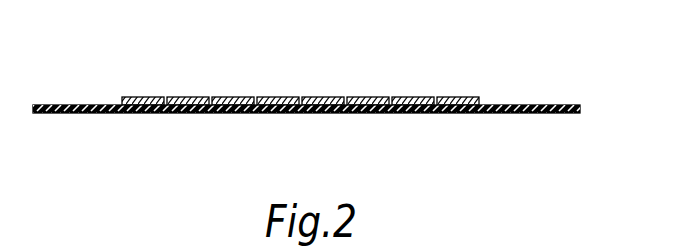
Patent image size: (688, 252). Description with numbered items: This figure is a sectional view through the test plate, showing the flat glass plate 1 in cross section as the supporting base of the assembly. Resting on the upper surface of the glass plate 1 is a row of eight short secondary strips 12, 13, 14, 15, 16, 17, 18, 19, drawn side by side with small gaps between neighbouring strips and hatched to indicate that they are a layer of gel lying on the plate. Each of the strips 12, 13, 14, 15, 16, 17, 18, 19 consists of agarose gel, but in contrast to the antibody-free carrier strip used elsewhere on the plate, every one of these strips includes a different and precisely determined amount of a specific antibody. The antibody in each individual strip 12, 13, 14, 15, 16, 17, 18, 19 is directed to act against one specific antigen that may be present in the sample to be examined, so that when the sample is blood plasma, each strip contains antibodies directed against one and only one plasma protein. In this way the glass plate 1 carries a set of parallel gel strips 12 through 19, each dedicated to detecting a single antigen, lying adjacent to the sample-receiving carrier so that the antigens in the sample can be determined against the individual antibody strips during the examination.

The glass plate 1 is at (513, 104).
The strip 12 is at (140, 97).
The strip 13 is at (190, 97).
The strip 14 is at (235, 97).
The strip 15 is at (280, 97).
The strip 16 is at (323, 97).
The strip 17 is at (367, 97).
The strip 18 is at (410, 97).
The strip 19 is at (455, 97).